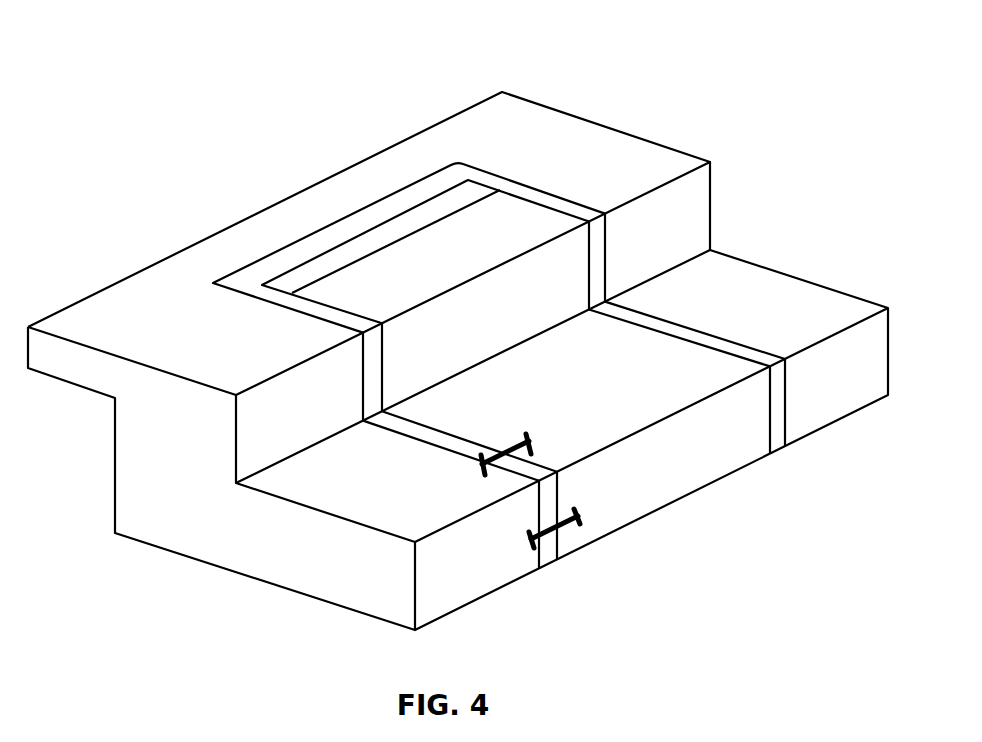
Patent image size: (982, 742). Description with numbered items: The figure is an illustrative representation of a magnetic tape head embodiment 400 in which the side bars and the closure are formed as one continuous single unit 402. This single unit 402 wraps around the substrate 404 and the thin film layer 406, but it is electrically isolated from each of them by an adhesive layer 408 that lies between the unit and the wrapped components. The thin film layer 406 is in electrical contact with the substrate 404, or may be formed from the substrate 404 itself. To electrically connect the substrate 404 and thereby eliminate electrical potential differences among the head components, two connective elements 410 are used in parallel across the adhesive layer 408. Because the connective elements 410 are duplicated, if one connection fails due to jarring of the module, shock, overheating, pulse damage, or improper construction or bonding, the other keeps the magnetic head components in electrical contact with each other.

The magnetic tape head embodiment 400 is at (752, 503).
The single unit 402 is at (580, 117).
The substrate 404 is at (667, 468).
The thin film layer 406 is at (325, 265).
The adhesive layer 408 is at (363, 215).
The connective elements 410 is at (487, 475).